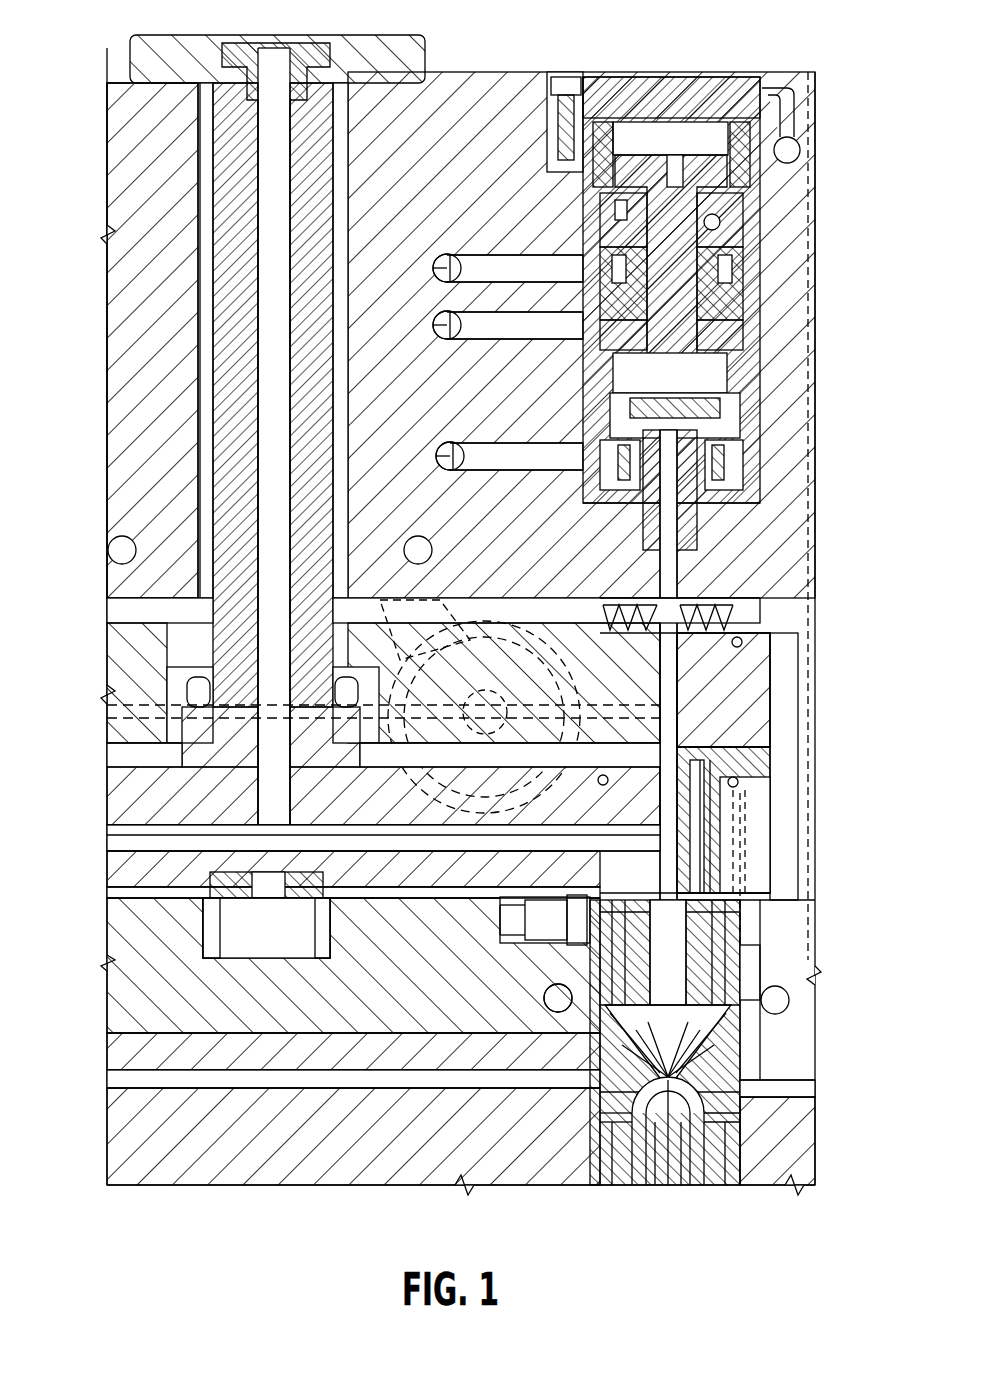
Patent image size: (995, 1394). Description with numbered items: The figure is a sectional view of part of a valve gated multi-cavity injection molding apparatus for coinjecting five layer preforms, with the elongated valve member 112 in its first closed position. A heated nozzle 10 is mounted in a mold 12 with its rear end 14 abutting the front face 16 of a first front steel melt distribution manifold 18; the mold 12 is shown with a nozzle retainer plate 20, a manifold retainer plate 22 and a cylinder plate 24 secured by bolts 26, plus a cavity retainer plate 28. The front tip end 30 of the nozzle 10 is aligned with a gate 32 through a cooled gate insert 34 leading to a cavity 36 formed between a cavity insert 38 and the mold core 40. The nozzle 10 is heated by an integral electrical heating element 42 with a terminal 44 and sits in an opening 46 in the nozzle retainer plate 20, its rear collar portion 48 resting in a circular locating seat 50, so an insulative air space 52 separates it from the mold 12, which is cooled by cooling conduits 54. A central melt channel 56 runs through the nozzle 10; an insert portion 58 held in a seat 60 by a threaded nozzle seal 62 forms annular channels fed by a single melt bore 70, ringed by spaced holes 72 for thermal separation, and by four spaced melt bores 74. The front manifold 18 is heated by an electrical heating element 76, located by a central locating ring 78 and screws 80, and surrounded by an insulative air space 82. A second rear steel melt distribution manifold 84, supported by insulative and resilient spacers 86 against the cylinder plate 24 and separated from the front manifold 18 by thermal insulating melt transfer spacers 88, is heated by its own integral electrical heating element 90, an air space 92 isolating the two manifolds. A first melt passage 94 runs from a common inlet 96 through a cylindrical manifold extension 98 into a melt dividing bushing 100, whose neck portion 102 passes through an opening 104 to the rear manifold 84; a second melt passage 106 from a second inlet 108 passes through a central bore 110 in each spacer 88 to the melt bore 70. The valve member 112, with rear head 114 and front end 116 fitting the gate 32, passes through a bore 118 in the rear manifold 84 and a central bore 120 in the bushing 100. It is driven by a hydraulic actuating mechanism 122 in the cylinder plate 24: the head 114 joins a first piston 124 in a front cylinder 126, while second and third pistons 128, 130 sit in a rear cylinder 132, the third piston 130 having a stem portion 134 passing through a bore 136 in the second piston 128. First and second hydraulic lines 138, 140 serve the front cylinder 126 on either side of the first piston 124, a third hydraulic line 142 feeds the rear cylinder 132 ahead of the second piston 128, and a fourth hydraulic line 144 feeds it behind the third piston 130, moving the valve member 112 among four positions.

The heated nozzle 10 is at (740, 941).
The mold 12 is at (102, 968).
The rear end 14 is at (690, 894).
The front face 16 is at (107, 885).
The first front steel melt distribution manifold 18 is at (107, 776).
The nozzle retainer plate 20 is at (107, 938).
The manifold retainer plate 22 is at (800, 718).
The cylinder plate 24 is at (496, 83).
The bolts 26 is at (810, 388).
The cavity retainer plate 28 is at (130, 1137).
The front tip end 30 is at (700, 1090).
The gate 32 is at (660, 1186).
The cooled gate insert 34 is at (700, 1122).
The cavity 36 is at (625, 1187).
The cavity insert 38 is at (712, 1186).
The mold core 40 is at (692, 1186).
The electrical heating element 42 is at (600, 1074).
The terminal 44 is at (600, 1030).
The opening 46 is at (600, 1078).
The rear collar portion 48 is at (760, 985).
The circular locating seat 50 is at (789, 1003).
The insulative air space 52 is at (600, 1094).
The cooling conduits 54 is at (125, 550).
The central melt channel 56 is at (755, 1036).
The insert portion 58 is at (808, 973).
The seat 60 is at (725, 966).
The threaded nozzle seal 62 is at (730, 1056).
The melt bore 70 is at (700, 921).
The spaced holes 72 is at (700, 907).
The spaced melt bores 74 is at (107, 831).
The electrical heating element 76 is at (640, 765).
The central locating ring 78 is at (207, 940).
The screws 80 is at (745, 825).
The insulative air space 82 is at (180, 890).
The second rear steel melt distribution manifold 84 is at (107, 638).
The insulative and resilient spacers 86 is at (770, 606).
The thermal insulating melt transfer spacers 88 is at (705, 769).
The integral electrical heating element 90 is at (720, 632).
The air space 92 is at (107, 742).
The first melt passage 94 is at (107, 353).
The common inlet 96 is at (272, 45).
The cylindrical manifold extension 98 is at (270, 349).
The melt dividing bushing 100 is at (720, 870).
The neck portion 102 is at (760, 756).
The opening 104 is at (695, 791).
The second melt passage 106 is at (690, 690).
The second inlet 108 is at (107, 688).
The central bore 110 is at (715, 852).
The elongated valve member 112 is at (700, 656).
The rear head 114 is at (678, 441).
The front end 116 is at (680, 1186).
The bore 118 is at (680, 680).
The central bore 120 is at (700, 812).
The actuating mechanism 122 is at (700, 266).
The first piston 124 is at (690, 425).
The front cylinder 126 is at (718, 375).
The second piston 128 is at (735, 205).
The third piston 130 is at (730, 165).
The rear cylinder 132 is at (715, 136).
The stem portion 134 is at (700, 296).
The bore 136 is at (690, 242).
The first hydraulic line 138 is at (293, 457).
The second hydraulic line 140 is at (293, 311).
The third hydraulic line 142 is at (293, 267).
The fourth hydraulic line 144 is at (792, 150).